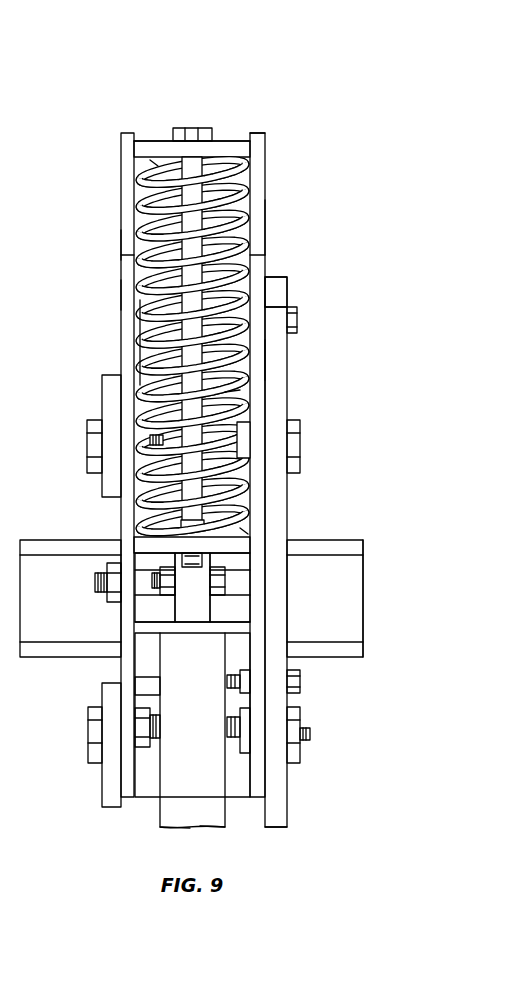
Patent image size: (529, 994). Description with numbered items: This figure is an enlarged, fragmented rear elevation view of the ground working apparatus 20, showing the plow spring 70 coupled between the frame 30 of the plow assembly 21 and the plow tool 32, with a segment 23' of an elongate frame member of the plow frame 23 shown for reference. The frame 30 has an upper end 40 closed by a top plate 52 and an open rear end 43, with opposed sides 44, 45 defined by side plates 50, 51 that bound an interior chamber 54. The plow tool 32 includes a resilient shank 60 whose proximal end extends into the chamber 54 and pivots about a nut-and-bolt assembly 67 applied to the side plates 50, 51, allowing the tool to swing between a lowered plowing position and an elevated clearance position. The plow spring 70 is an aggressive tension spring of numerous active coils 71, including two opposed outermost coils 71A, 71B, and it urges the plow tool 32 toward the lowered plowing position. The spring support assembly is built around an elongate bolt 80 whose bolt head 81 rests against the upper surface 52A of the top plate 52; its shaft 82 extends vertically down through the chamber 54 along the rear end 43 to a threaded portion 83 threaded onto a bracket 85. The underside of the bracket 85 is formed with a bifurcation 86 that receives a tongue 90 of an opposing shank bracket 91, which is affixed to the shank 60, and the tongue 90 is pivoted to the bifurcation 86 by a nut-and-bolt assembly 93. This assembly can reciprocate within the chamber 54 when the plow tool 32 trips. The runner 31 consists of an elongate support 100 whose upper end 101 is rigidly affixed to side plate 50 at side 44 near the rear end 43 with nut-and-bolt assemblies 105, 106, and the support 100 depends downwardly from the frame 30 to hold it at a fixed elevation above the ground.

The ground working apparatus 20 is at (294, 60).
The plow assembly 21 is at (147, 839).
The plow frame 23 is at (218, 565).
The segment 23' is at (385, 598).
The frame 30 is at (117, 129).
The runner 31 is at (292, 823).
The plow tool 32 is at (227, 831).
The upper end 40 is at (262, 134).
The rear end 43 is at (260, 284).
The side 44 is at (266, 231).
The side 45 is at (119, 244).
The side plate 50 is at (264, 358).
The side plate 51 is at (121, 294).
The top plate 52 is at (229, 149).
The upper surface 52A is at (224, 146).
The chamber 54 is at (232, 393).
The shank 60 is at (177, 657).
The nut-and-bolt assembly 67 is at (91, 592).
The plow spring 70 is at (121, 396).
The active coils 71 is at (150, 382).
The outermost coil 71A is at (153, 163).
The outermost coil 71B is at (244, 531).
The bolt 80 is at (178, 210).
The bolt head 81 is at (193, 128).
The shaft 82 is at (200, 236).
The threaded portion 83 is at (184, 524).
The bracket 85 is at (245, 547).
The bifurcation 86 is at (210, 560).
The tongue 90 is at (200, 604).
The shank bracket 91 is at (150, 630).
The nut-and-bolt assembly 93 is at (226, 583).
The elongate support 100 is at (281, 795).
The upper end 101 is at (277, 458).
The nut-and-bolt assembly 105 is at (298, 318).
The nut-and-bolt assembly 106 is at (299, 684).